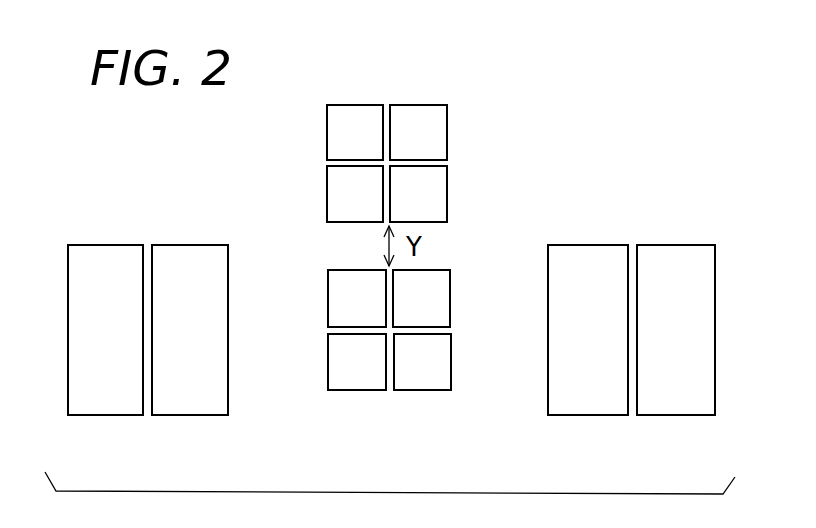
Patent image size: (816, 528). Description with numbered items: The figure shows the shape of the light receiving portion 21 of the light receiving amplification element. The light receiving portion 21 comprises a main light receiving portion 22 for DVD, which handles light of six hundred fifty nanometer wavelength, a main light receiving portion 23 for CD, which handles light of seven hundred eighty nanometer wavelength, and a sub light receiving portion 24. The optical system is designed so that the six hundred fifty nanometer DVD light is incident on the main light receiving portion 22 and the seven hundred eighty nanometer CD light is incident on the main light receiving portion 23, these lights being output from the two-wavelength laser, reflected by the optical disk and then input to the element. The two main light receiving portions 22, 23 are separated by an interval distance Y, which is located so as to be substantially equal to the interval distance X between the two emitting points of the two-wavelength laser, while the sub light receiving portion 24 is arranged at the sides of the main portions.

The light receiving portion 21 is at (582, 128).
The main light receiving portion for DVD 22 is at (320, 165).
The main light receiving portion for CD 23 is at (392, 397).
The sub light receiving portion 24 is at (152, 427).